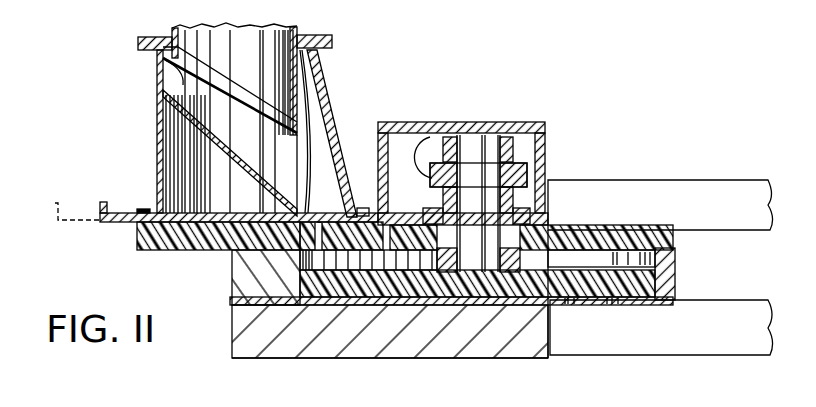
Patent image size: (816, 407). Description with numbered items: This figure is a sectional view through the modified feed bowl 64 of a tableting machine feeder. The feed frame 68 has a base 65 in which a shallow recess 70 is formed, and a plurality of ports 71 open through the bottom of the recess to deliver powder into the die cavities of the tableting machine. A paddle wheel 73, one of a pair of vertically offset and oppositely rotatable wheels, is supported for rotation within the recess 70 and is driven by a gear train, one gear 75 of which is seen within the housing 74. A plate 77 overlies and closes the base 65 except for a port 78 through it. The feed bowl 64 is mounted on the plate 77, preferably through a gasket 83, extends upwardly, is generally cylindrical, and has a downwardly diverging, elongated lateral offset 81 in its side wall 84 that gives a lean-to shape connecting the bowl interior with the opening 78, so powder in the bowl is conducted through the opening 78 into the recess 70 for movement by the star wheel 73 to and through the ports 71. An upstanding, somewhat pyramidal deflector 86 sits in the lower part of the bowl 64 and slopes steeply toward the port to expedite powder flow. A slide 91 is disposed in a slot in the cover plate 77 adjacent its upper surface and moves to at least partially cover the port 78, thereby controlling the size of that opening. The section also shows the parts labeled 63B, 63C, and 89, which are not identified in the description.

The belt end 63B is at (292, 213).
The belt end 63C is at (137, 212).
The housing wall 64 is at (157, 117).
The base plate 65 is at (233, 304).
The support block 68 is at (232, 292).
The spring 70 is at (300, 252).
The seal 71 is at (605, 298).
The base block 73 is at (383, 283).
The housing 74 is at (547, 131).
The bearing shaft 75 is at (410, 140).
The mounting block 77 is at (137, 240).
The slot 78 is at (318, 240).
The filter element 81 is at (297, 90).
The plate 83 is at (137, 222).
The strut 84 is at (322, 97).
The gasket 86 is at (177, 88).
The band 89 is at (253, 151).
The cover 91 is at (100, 205).